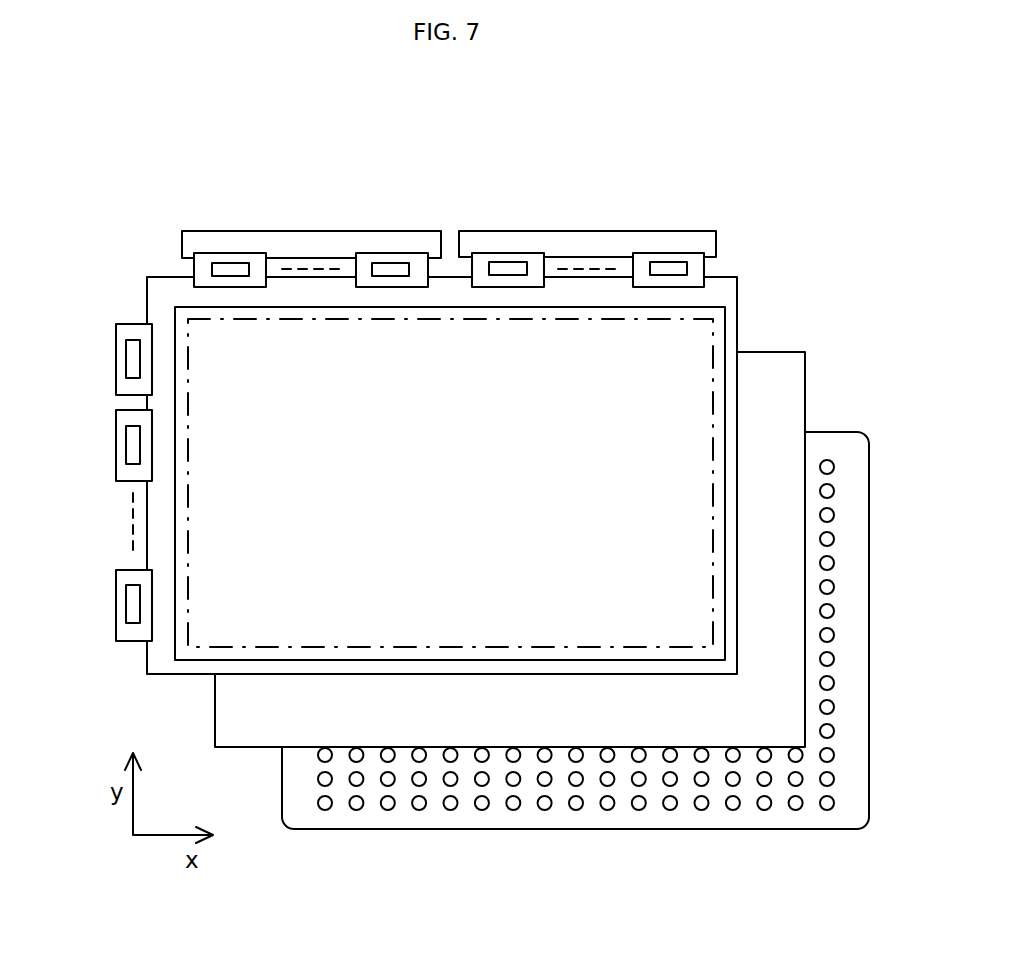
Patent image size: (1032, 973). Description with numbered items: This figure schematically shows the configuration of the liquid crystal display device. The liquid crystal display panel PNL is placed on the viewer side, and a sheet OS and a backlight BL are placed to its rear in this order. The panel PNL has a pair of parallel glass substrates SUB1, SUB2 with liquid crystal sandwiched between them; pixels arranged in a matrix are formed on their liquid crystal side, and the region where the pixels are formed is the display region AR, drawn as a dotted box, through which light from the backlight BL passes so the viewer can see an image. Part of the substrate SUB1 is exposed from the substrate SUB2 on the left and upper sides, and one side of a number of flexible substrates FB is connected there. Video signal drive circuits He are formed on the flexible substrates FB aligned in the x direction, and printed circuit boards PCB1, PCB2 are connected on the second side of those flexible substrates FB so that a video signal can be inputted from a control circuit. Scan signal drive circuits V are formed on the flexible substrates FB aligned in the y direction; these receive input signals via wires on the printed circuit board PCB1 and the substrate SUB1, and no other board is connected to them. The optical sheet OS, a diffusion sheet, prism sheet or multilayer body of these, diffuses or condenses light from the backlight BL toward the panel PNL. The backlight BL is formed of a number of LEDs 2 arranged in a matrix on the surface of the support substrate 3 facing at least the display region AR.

The liquid crystal display panel PNL is at (637, 205).
The substrate SUB1 is at (165, 277).
The substrate SUB2 is at (175, 647).
The display region AR is at (450, 483).
The printed circuit board PCB1 is at (335, 231).
The printed circuit board PCB2 is at (587, 231).
The flexible substrate FB is at (218, 253).
The video signal drive circuit He is at (243, 262).
The scan signal drive circuit V is at (126, 360).
The optical sheet OS is at (767, 338).
The backlight BL is at (832, 418).
The LED 2 is at (828, 610).
The support substrate 3 is at (500, 817).